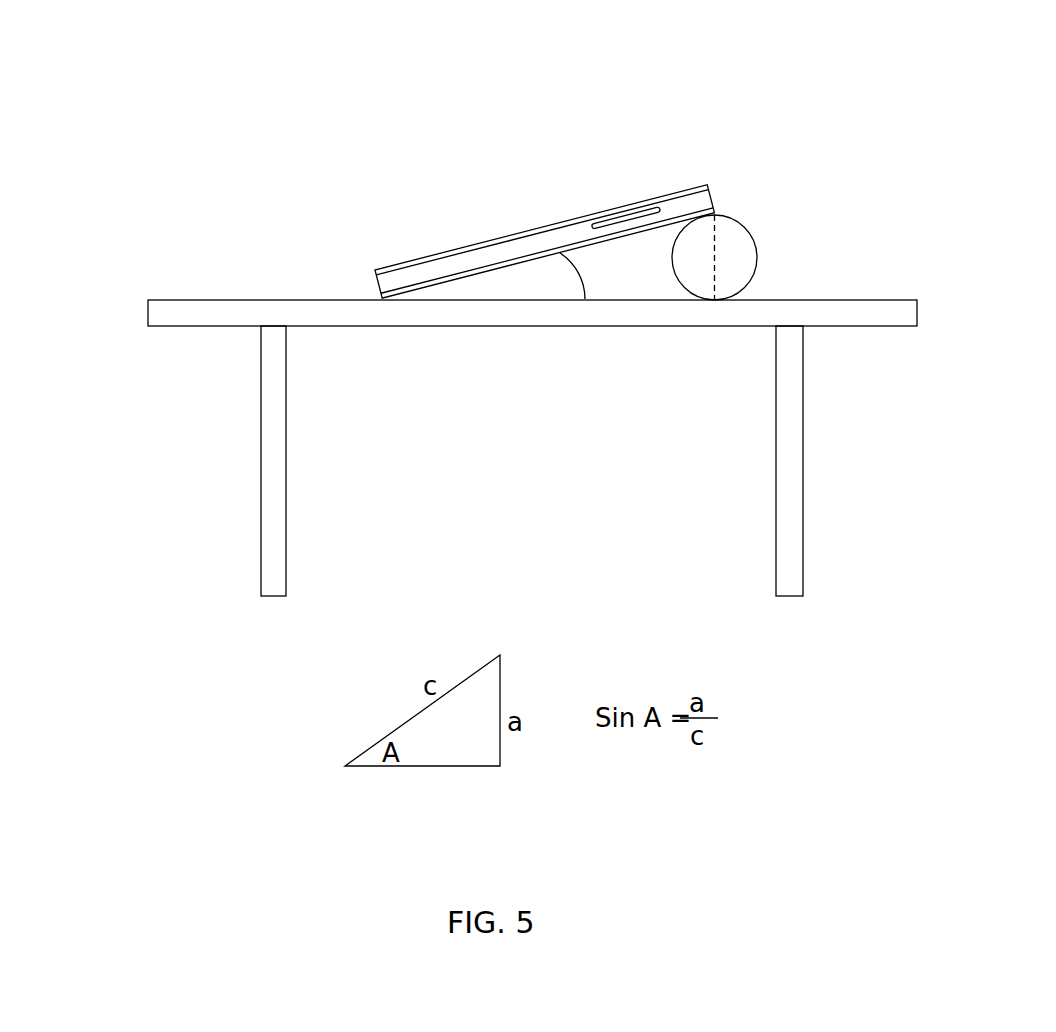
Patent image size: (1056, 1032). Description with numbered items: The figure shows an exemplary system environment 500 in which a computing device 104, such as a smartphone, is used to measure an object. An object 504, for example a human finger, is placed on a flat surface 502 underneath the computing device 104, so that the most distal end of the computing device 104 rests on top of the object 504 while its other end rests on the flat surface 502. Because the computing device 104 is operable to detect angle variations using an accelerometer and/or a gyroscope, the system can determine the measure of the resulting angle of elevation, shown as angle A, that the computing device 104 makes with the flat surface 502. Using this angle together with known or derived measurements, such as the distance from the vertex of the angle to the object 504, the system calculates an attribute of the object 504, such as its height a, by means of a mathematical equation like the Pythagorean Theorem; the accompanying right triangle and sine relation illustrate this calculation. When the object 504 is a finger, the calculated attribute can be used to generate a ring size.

The system environment 500 is at (1008, 68).
The flat surface 502 is at (158, 300).
The computing device 104 is at (373, 270).
The object 504 is at (757, 250).